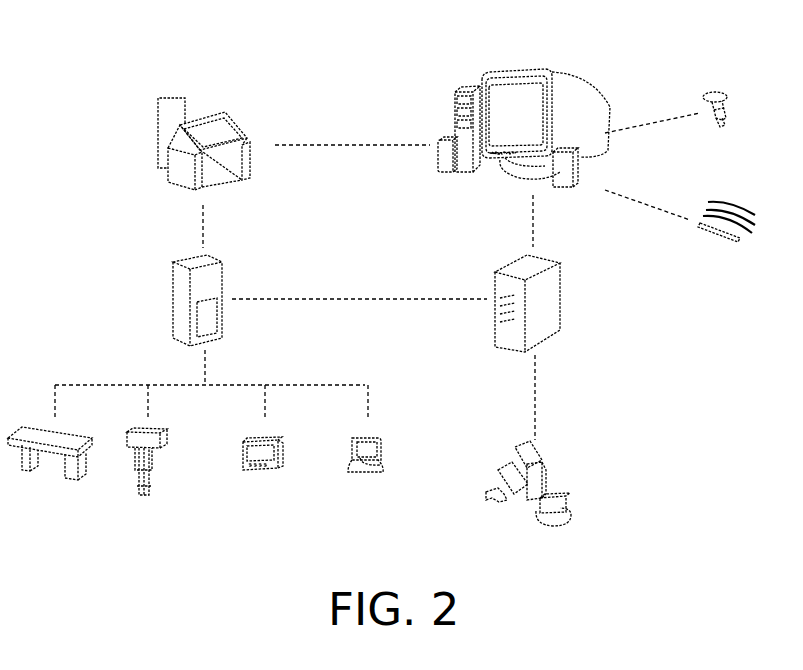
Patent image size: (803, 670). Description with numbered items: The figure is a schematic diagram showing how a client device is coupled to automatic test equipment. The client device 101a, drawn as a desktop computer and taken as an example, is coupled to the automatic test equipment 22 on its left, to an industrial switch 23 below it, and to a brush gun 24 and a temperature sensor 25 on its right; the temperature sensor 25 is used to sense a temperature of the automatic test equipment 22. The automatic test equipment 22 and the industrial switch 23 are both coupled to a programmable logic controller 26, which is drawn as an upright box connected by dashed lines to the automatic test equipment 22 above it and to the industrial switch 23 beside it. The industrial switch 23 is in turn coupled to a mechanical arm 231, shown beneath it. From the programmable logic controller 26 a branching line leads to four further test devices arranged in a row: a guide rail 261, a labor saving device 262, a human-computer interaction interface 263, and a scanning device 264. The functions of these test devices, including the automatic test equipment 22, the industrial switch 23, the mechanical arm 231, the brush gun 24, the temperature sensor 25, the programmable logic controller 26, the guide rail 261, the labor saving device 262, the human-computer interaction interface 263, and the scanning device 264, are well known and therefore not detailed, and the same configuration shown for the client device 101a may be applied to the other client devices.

The automatic test equipment 22 is at (202, 105).
The client device 101a is at (505, 70).
The brush gun 24 is at (710, 87).
The temperature sensor 25 is at (720, 250).
The programmable logic controller 26 is at (173, 280).
The industrial switch 23 is at (565, 300).
The guide rail 261 is at (48, 478).
The labor saving device 262 is at (145, 503).
The human-computer interaction interface 263 is at (263, 483).
The scanning device 264 is at (367, 483).
The mechanical arm 231 is at (528, 510).